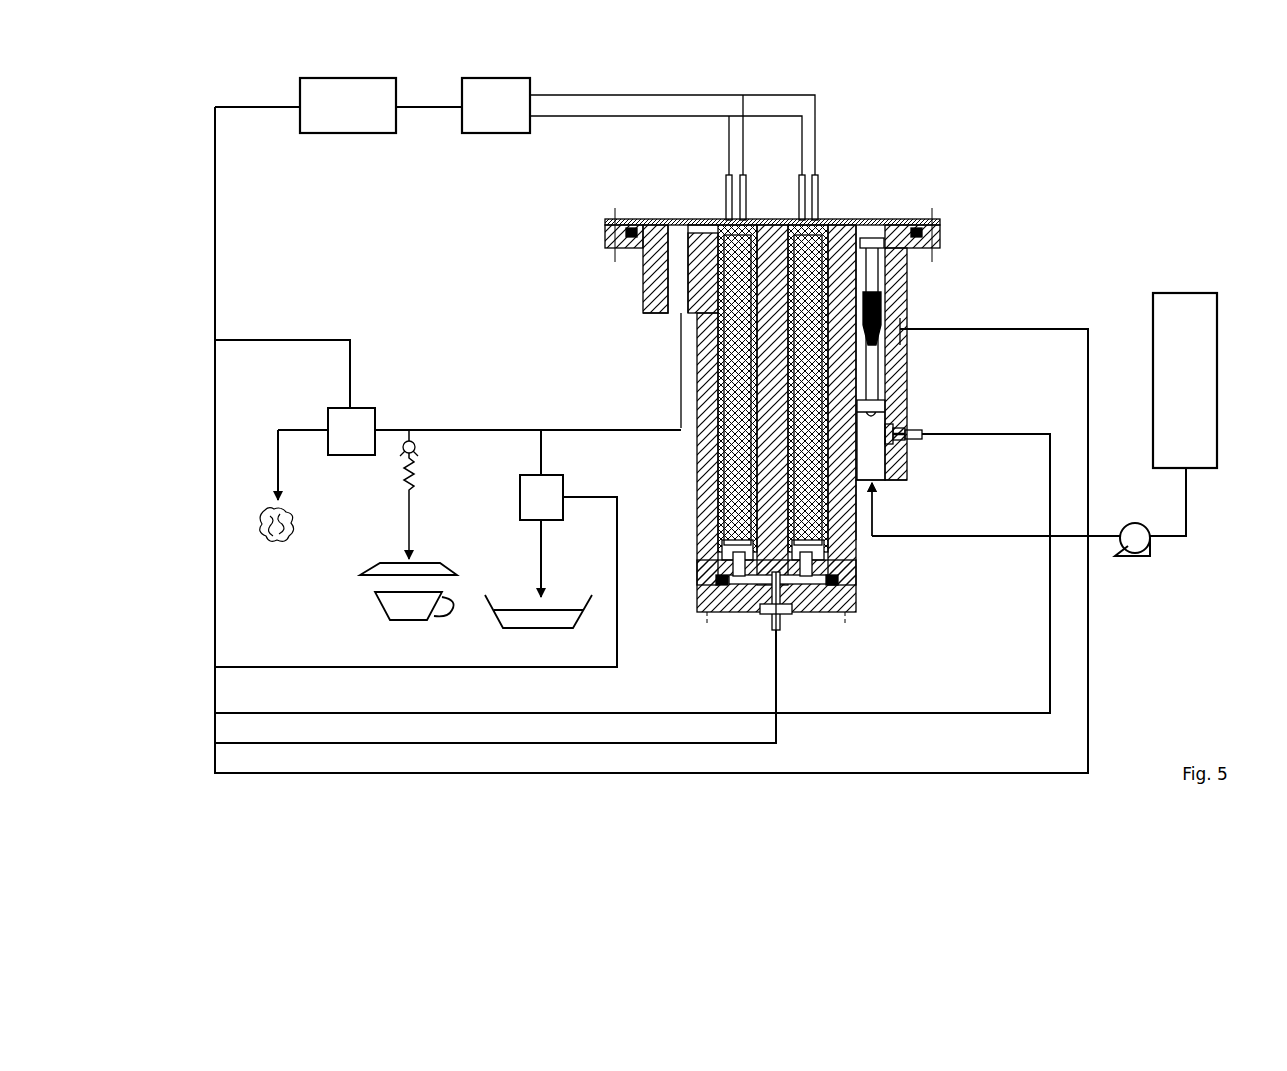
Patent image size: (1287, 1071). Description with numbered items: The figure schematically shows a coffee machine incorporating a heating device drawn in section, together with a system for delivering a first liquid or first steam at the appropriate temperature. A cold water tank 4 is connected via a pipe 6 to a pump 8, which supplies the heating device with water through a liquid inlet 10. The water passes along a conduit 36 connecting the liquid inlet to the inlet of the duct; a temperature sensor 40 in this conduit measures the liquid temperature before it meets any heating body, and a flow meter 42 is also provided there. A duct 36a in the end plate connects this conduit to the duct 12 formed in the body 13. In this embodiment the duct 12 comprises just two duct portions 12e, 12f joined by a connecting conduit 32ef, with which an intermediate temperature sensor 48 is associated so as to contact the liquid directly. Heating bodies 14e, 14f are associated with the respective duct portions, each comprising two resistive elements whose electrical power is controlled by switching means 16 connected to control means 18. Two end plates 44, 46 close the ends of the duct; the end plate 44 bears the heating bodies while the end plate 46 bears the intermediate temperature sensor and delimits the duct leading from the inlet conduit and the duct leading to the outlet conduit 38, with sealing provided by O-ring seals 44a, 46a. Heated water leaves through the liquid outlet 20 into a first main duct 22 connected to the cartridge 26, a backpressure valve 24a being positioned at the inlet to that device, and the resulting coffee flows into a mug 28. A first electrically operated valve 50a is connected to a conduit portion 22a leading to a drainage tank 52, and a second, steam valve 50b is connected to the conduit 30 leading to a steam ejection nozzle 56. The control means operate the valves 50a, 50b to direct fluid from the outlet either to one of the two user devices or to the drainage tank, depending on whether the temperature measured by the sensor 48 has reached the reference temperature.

The cold water tank 4 is at (1200, 418).
The pipe 6 is at (1188, 505).
The pump 8 is at (1140, 558).
The liquid inlet 10 is at (878, 484).
The duct 12 is at (706, 367).
The duct portion 12e is at (787, 402).
The duct portion 12f is at (723, 368).
The body 13 is at (772, 425).
The heating body 14e is at (792, 222).
The heating body 14f is at (722, 222).
The switching means 16 is at (506, 92).
The control means 18 is at (360, 95).
The liquid outlet 20 is at (678, 323).
The first main duct 22 is at (428, 428).
The conduit portion 22a is at (542, 455).
The backpressure valve 24a is at (412, 488).
The cartridge 26 is at (380, 567).
The mug 28 is at (385, 608).
The conduit 30 is at (290, 428).
The connecting conduit 32ef is at (828, 613).
The conduit 36 is at (873, 447).
The duct 36a is at (845, 231).
The conduit 38 is at (680, 263).
The temperature sensor 40 is at (905, 423).
The flow meter 42 is at (895, 312).
The end plate 44 is at (655, 225).
The O-ring seal 44a is at (631, 228).
The end plate 46 is at (802, 613).
The O-ring seal 46a is at (716, 579).
The intermediate temperature sensor 48 is at (768, 620).
The first electrically operated valve 50a is at (541, 536).
The steam valve 50b is at (351, 431).
The drainage tank 52 is at (495, 622).
The steam ejection nozzle 56 is at (270, 496).